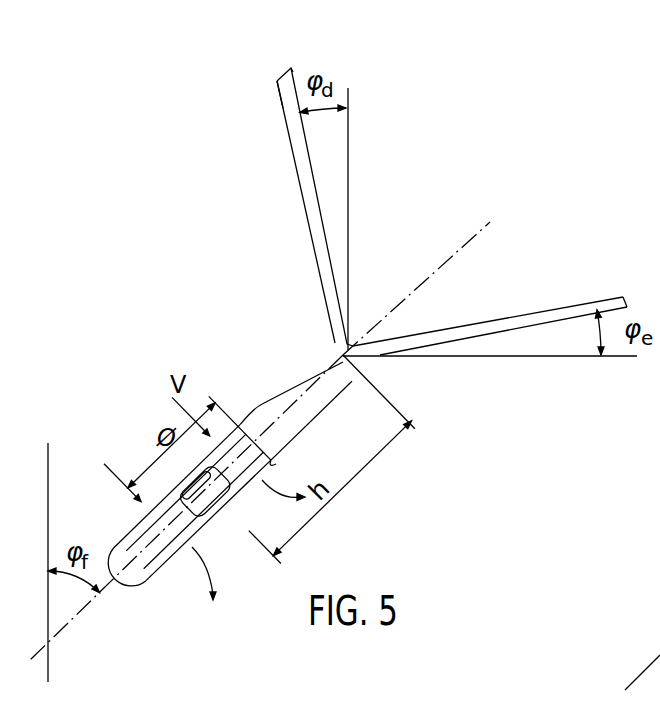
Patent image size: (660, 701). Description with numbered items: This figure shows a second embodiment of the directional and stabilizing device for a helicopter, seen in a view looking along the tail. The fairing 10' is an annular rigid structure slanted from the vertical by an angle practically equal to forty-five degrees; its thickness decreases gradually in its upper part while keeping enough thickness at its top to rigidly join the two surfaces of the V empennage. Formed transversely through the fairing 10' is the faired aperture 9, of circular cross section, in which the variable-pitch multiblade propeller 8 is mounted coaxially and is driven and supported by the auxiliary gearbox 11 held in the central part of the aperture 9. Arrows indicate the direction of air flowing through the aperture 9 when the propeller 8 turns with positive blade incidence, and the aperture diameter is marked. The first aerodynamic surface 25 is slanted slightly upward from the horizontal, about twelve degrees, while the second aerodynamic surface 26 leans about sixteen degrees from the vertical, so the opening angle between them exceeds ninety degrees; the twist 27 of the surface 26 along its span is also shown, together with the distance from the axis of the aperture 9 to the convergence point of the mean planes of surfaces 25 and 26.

The multiblade propeller with variable pitch 8 is at (220, 457).
The faired aperture 9 is at (173, 540).
The fairing 10' is at (296, 395).
The auxiliary gearbox 11 is at (213, 522).
The first aerodynamic surface 25 is at (538, 312).
The second aerodynamic surface 26 is at (313, 238).
The twist 27 is at (293, 82).